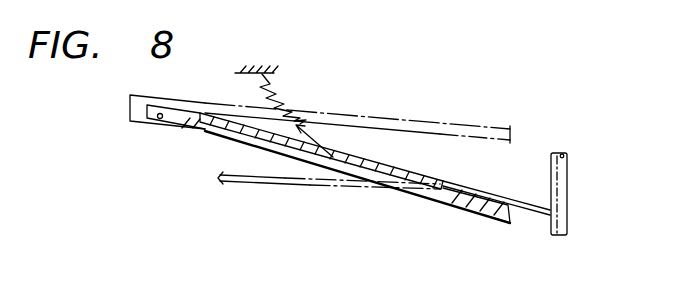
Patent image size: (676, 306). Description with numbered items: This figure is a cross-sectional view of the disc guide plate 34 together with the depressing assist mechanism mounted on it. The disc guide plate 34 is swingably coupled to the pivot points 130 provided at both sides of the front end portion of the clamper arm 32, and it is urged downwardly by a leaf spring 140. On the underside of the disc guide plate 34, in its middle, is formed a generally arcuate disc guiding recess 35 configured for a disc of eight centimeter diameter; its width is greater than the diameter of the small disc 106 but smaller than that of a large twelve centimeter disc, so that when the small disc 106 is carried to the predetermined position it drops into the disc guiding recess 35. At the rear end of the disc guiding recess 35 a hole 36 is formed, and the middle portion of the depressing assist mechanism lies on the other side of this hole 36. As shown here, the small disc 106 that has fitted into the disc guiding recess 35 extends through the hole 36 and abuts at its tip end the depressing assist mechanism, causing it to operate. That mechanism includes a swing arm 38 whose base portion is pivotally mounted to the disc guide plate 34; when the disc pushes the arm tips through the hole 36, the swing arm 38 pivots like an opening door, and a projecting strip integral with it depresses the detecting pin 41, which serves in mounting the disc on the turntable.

The clamper arm 32 is at (434, 121).
The disc guide plate 34 is at (498, 223).
The disc guiding recess 35 is at (345, 158).
The hole 36 is at (442, 198).
The swing arm 38 is at (517, 200).
The detecting pin 41 is at (567, 165).
The small disc 106 is at (265, 186).
The pivot point 130 is at (157, 121).
The leaf spring 140 is at (320, 146).